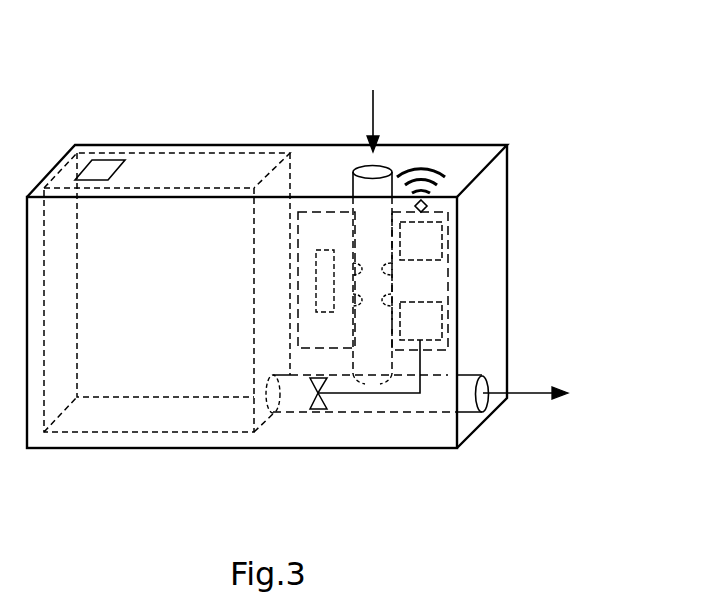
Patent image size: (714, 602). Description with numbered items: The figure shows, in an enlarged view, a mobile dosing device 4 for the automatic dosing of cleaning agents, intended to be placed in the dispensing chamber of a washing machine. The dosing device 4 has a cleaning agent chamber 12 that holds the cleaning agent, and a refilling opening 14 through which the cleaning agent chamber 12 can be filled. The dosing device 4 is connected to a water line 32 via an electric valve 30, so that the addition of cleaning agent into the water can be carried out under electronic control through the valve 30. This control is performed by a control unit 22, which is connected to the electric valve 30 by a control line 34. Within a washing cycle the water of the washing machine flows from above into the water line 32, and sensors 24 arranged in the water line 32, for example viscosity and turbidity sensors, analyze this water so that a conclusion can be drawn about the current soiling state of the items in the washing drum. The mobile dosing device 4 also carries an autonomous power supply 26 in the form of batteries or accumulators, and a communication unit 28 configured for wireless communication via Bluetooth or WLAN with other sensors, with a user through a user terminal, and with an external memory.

The mobile dosing device 4 is at (547, 97).
The cleaning agent chamber 12 is at (100, 407).
The refilling opening 14 is at (103, 172).
The control unit 22 is at (428, 328).
The sensors 24 is at (383, 268).
The autonomous power supply 26 is at (320, 253).
The communication unit 28 is at (428, 234).
The electric valve 30 is at (306, 393).
The water line 32 is at (377, 114).
The control line 34 is at (378, 395).